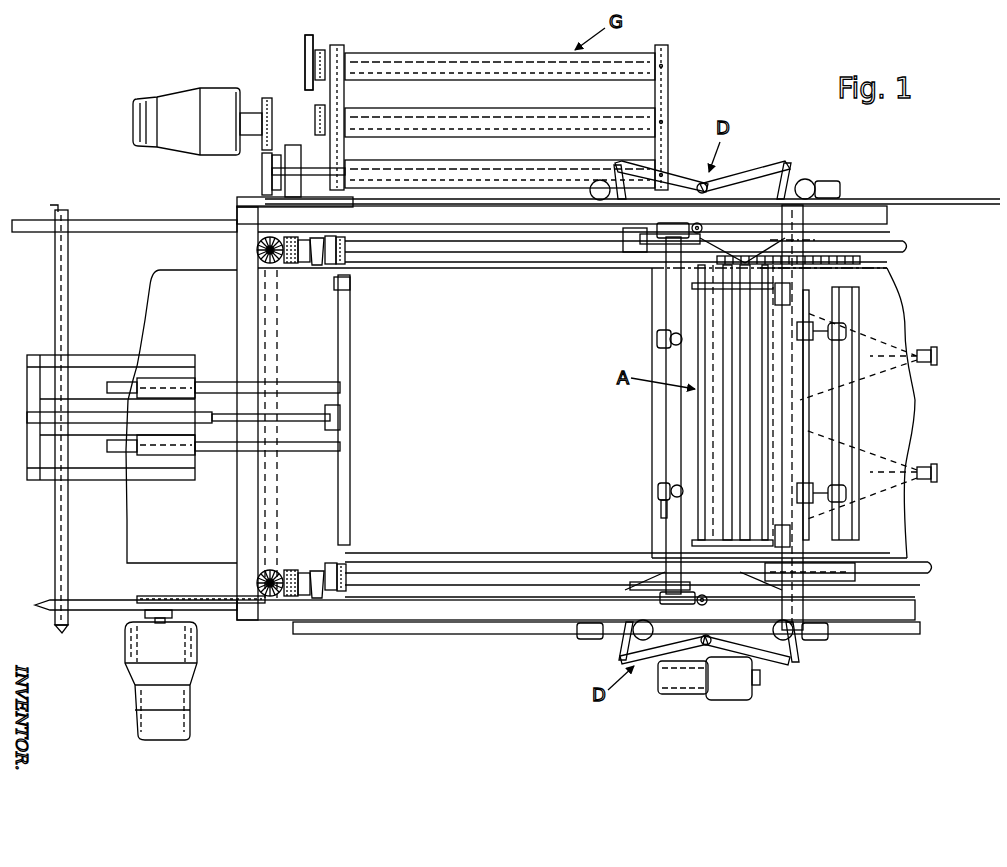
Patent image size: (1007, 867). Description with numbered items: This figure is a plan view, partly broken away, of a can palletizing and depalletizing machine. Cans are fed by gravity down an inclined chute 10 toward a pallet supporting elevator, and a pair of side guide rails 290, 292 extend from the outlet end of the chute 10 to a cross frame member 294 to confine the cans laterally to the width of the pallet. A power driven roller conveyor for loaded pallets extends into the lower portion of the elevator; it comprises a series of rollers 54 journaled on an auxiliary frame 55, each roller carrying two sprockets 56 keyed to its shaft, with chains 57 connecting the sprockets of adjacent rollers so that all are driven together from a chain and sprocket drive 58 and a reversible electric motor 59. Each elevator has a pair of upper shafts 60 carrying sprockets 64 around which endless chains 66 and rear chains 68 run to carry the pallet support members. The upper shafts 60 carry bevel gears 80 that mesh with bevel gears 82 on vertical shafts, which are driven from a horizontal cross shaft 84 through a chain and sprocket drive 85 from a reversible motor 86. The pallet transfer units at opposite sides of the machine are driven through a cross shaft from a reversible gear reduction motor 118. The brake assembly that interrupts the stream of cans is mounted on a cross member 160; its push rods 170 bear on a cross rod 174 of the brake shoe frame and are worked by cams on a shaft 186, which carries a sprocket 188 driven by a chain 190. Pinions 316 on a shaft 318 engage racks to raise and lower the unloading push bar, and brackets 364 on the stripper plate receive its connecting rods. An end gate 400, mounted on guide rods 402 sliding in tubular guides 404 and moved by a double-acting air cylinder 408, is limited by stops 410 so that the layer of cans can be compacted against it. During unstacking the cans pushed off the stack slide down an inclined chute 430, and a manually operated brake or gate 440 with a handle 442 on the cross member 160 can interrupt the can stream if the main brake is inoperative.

The inclined chute 10 is at (892, 320).
The rollers 54 is at (453, 78).
The auxiliary frame 55 is at (344, 95).
The sprockets 56 is at (314, 50).
The chains 57 is at (305, 43).
The chain and sprocket drive 58 is at (268, 130).
The reversible electric motor 59 is at (216, 88).
The upper shafts 60 is at (427, 253).
The sprockets 64 is at (346, 254).
The endless chains 66 is at (336, 570).
The endless chains 68 is at (337, 260).
The bevel gears 80 is at (293, 266).
The bevel gears 82 is at (272, 239).
The horizontal cross shaft 84 is at (276, 358).
The chain and sprocket drive 85 is at (212, 597).
The reversible motor 86 is at (194, 698).
The reversible gear reduction motor 118 is at (728, 690).
The cross member 160 is at (800, 594).
The push rods 170 is at (668, 413).
The cross rod 174 is at (698, 406).
The shaft 186 is at (727, 327).
The sprocket 188 is at (736, 260).
The chain 190 is at (850, 268).
The side guide rail 290 is at (542, 268).
The side guide rail 292 is at (467, 560).
The cross frame member 294 is at (247, 292).
The pinions 316 is at (656, 338).
The shaft 318 is at (666, 459).
The brackets 364 is at (933, 478).
The end gate 400 is at (340, 416).
The guide rods 402 is at (217, 382).
The tubular guides 404 is at (152, 378).
The double-acting air cylinder 408 is at (178, 444).
The stops 410 is at (128, 382).
The inclined chute 430 is at (184, 282).
The manually operated brake or gate 440 is at (846, 303).
The handle 442 is at (848, 497).